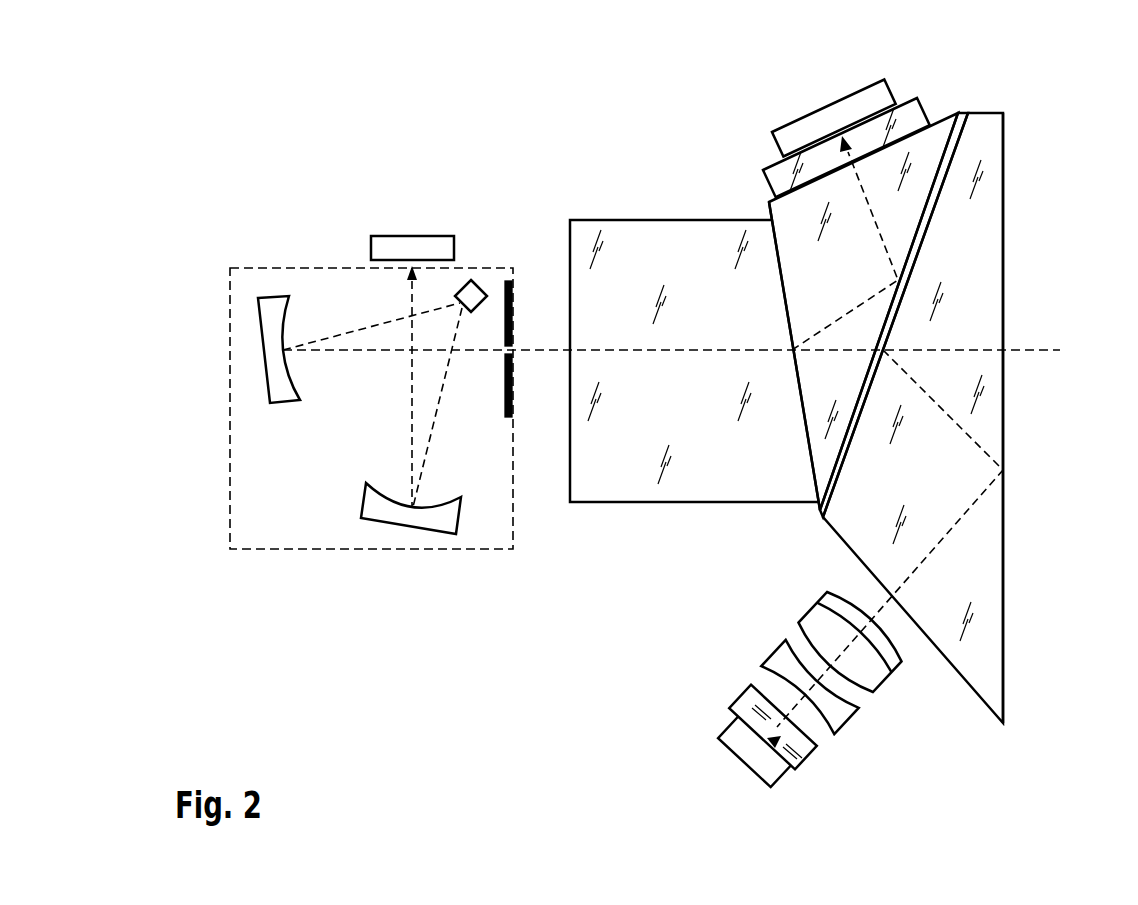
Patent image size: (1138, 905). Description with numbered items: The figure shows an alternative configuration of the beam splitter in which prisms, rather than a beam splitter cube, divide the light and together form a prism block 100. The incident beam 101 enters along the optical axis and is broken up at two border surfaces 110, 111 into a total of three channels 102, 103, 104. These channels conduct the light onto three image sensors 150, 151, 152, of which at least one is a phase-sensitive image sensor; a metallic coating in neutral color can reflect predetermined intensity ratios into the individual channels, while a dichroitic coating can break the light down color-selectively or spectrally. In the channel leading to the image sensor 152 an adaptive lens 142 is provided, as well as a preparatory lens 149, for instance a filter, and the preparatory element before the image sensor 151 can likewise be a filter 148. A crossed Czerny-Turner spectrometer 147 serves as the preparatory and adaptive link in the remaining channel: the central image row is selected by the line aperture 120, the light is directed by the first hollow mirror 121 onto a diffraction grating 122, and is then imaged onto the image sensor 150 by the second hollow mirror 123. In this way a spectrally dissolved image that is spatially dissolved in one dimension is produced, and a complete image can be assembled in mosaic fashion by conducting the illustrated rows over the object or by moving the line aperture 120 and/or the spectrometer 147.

The prism block 100 is at (1015, 163).
The incident beam 101 is at (1040, 350).
The channel 102 is at (672, 354).
The channel 103 is at (829, 322).
The channel 104 is at (968, 500).
The border surface 110 is at (931, 218).
The border surface 111 is at (809, 447).
The line aperture 120 is at (509, 298).
The first hollow mirror 121 is at (265, 297).
The diffraction grating 122 is at (473, 280).
The second hollow mirror 123 is at (408, 530).
The adaptive lens 142 is at (877, 723).
The crossed Czerny-Turner spectrometer 147 is at (344, 571).
The filter 148 is at (923, 109).
The preparatory lens 149 is at (810, 763).
The image sensor 150 is at (412, 236).
The image sensor 151 is at (828, 104).
The image sensor 152 is at (743, 767).